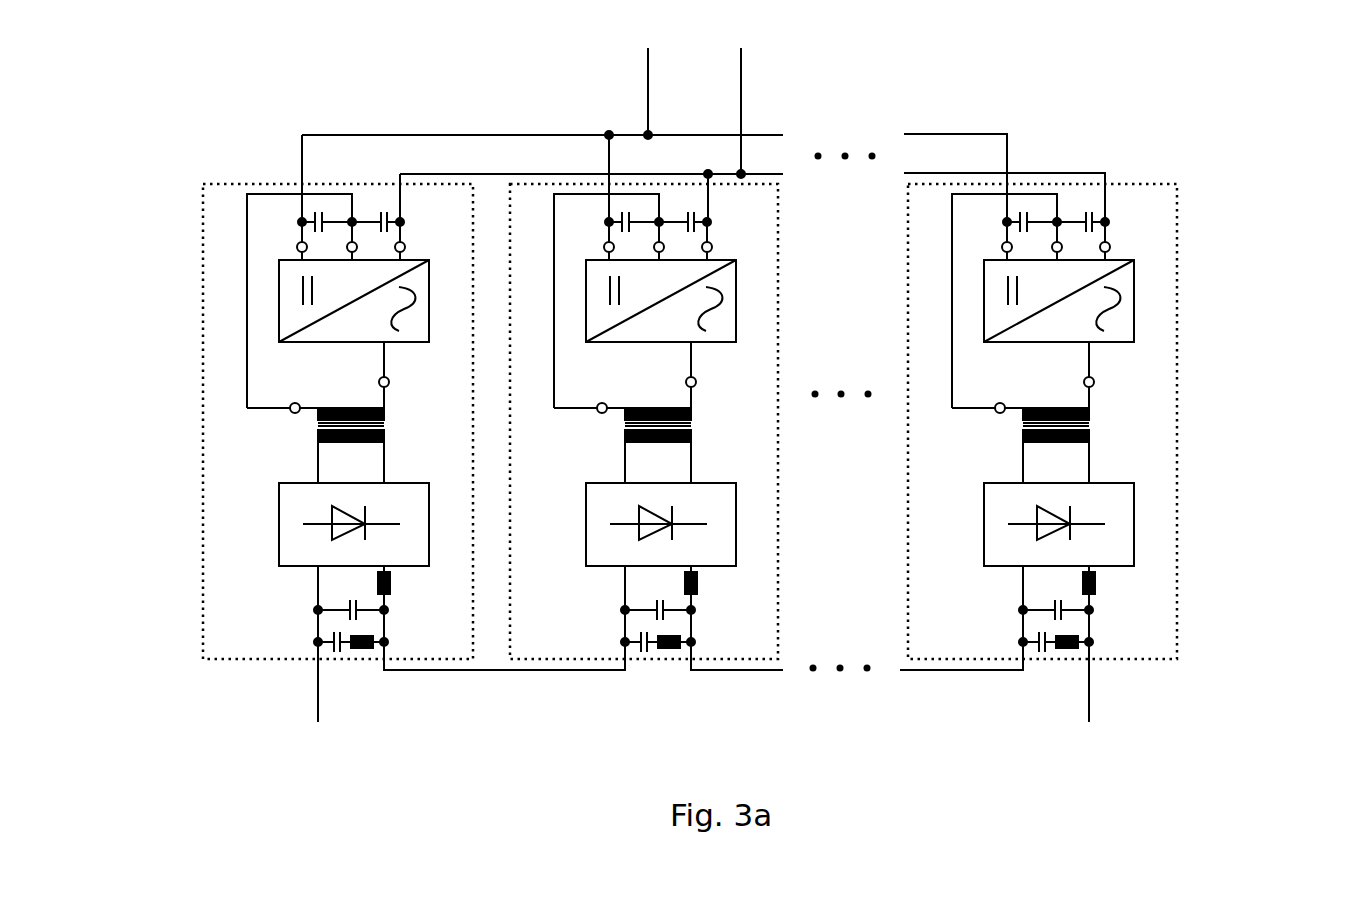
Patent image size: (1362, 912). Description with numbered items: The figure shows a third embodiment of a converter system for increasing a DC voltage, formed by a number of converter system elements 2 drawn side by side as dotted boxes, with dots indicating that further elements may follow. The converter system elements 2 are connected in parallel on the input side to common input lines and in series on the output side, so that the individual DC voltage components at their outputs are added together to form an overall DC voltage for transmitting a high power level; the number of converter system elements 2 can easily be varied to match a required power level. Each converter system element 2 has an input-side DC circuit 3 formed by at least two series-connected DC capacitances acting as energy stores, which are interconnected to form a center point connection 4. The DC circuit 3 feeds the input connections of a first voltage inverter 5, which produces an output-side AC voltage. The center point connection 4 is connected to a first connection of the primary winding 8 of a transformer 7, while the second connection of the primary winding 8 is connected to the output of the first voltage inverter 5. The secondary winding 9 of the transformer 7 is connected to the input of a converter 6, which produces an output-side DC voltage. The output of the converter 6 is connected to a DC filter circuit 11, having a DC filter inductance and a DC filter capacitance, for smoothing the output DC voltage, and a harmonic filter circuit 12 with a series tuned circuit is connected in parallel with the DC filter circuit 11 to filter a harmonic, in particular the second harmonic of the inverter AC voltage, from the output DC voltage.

The converter system element 2 is at (203, 468).
The input-side DC circuit 3 is at (1120, 221).
The center point connection 4 is at (1057, 222).
The first voltage inverter 5 is at (1134, 330).
The converter 6 is at (1134, 517).
The transformer 7 is at (1175, 456).
The primary winding 8 is at (1089, 416).
The secondary winding 9 is at (1089, 440).
The DC filter circuit 11 is at (1100, 602).
The harmonic filter circuit 12 is at (1100, 637).